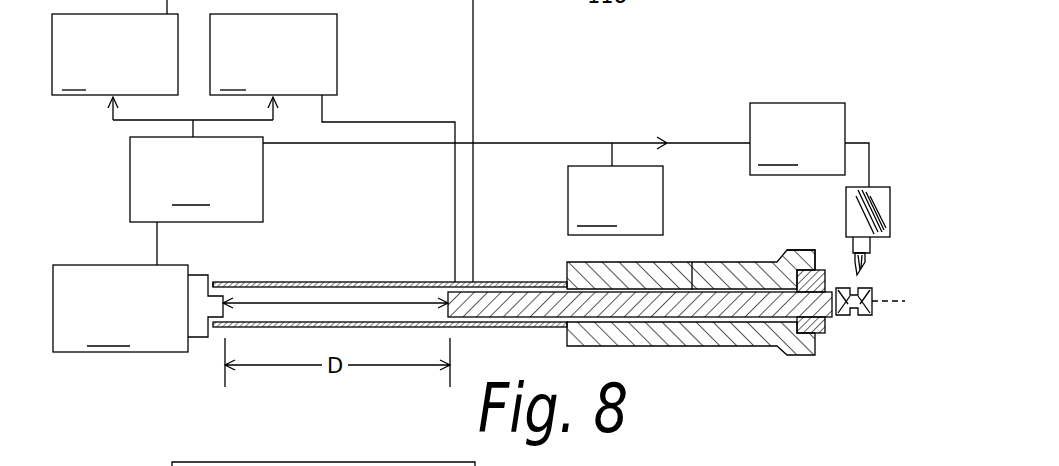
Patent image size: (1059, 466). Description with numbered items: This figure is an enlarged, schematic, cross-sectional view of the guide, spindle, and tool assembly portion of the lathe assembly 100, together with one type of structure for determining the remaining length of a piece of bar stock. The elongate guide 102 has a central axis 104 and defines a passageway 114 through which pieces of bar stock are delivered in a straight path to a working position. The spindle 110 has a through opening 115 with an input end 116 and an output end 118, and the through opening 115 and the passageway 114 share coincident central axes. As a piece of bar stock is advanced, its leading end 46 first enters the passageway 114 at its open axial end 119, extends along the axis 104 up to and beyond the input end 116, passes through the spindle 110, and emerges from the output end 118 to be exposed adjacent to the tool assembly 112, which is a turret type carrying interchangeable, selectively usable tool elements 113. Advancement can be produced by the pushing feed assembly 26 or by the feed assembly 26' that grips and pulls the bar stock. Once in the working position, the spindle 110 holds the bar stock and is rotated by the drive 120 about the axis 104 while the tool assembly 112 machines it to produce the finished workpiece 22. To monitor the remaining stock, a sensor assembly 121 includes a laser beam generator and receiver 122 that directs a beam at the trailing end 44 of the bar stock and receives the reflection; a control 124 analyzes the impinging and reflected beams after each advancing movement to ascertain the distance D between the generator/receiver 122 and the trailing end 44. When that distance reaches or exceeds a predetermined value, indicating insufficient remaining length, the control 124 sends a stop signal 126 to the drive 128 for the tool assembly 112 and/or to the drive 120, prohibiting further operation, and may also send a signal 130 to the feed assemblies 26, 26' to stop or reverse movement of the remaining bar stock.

The feed assembly 26 is at (115, 54).
The feed assembly 26' is at (273, 54).
The control 124 is at (196, 201).
The signal 130 is at (130, 122).
The laser beam generator and receiver 122 is at (138, 308).
The stop signal 126 is at (598, 141).
The drive 120 is at (615, 200).
The drive 128 is at (797, 139).
The tool assembly 112 is at (891, 195).
The tool elements 113 is at (860, 268).
The passageway 114 is at (358, 281).
The sensor assembly 121 is at (224, 278).
The open axial end 119 is at (213, 330).
The trailing end 44 is at (419, 281).
The lathe assembly 100 is at (672, 277).
The guide 102 is at (527, 277).
The input end 116 is at (567, 337).
The through opening 115 is at (691, 262).
The spindle 110 is at (817, 250).
The leading end 46 is at (832, 283).
The output end 118 is at (829, 335).
The workpiece 22 is at (866, 317).
The central axis 104 is at (897, 301).